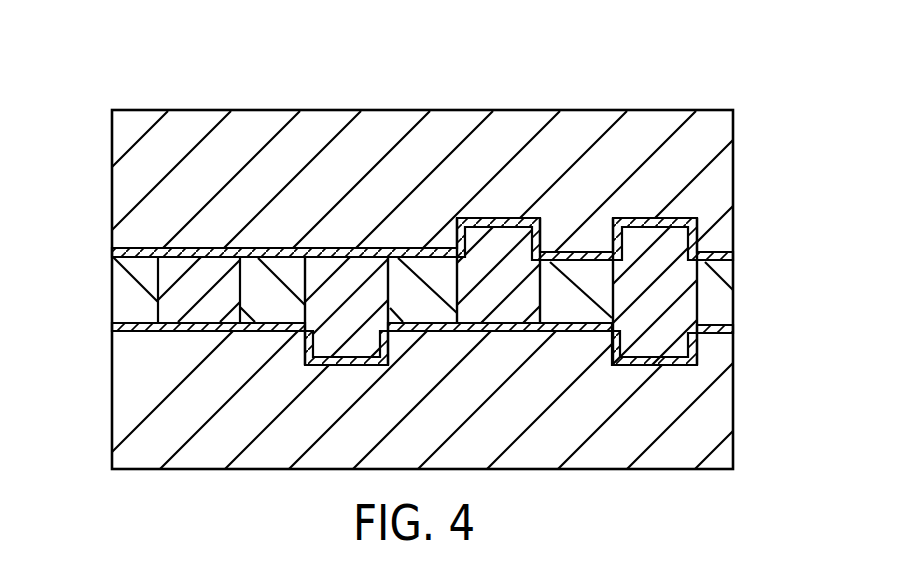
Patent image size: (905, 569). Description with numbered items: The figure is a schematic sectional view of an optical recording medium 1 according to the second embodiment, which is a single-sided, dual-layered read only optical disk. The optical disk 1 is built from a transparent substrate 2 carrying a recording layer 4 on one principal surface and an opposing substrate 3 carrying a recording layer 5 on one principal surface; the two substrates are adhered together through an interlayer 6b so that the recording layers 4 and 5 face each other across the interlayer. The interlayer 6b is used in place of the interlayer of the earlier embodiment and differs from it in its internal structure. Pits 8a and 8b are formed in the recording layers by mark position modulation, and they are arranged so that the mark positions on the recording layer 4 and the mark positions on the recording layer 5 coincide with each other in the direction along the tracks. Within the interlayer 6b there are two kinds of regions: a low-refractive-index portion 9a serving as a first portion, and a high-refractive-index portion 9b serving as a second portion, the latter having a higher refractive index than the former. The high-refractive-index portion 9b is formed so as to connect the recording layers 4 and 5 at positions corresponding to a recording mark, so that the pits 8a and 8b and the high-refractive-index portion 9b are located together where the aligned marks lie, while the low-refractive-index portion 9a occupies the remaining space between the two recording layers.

The optical recording medium 1 is at (732, 84).
The transparent substrate 2 is at (115, 403).
The opposing substrate 3 is at (113, 148).
The recording layer 4 is at (116, 339).
The recording layer 5 is at (131, 249).
The interlayer 6b is at (98, 290).
The pit 8a is at (674, 378).
The pit 8b is at (653, 206).
The low-refractive-index portion 9a is at (262, 259).
The high-refractive-index portion 9b is at (330, 278).